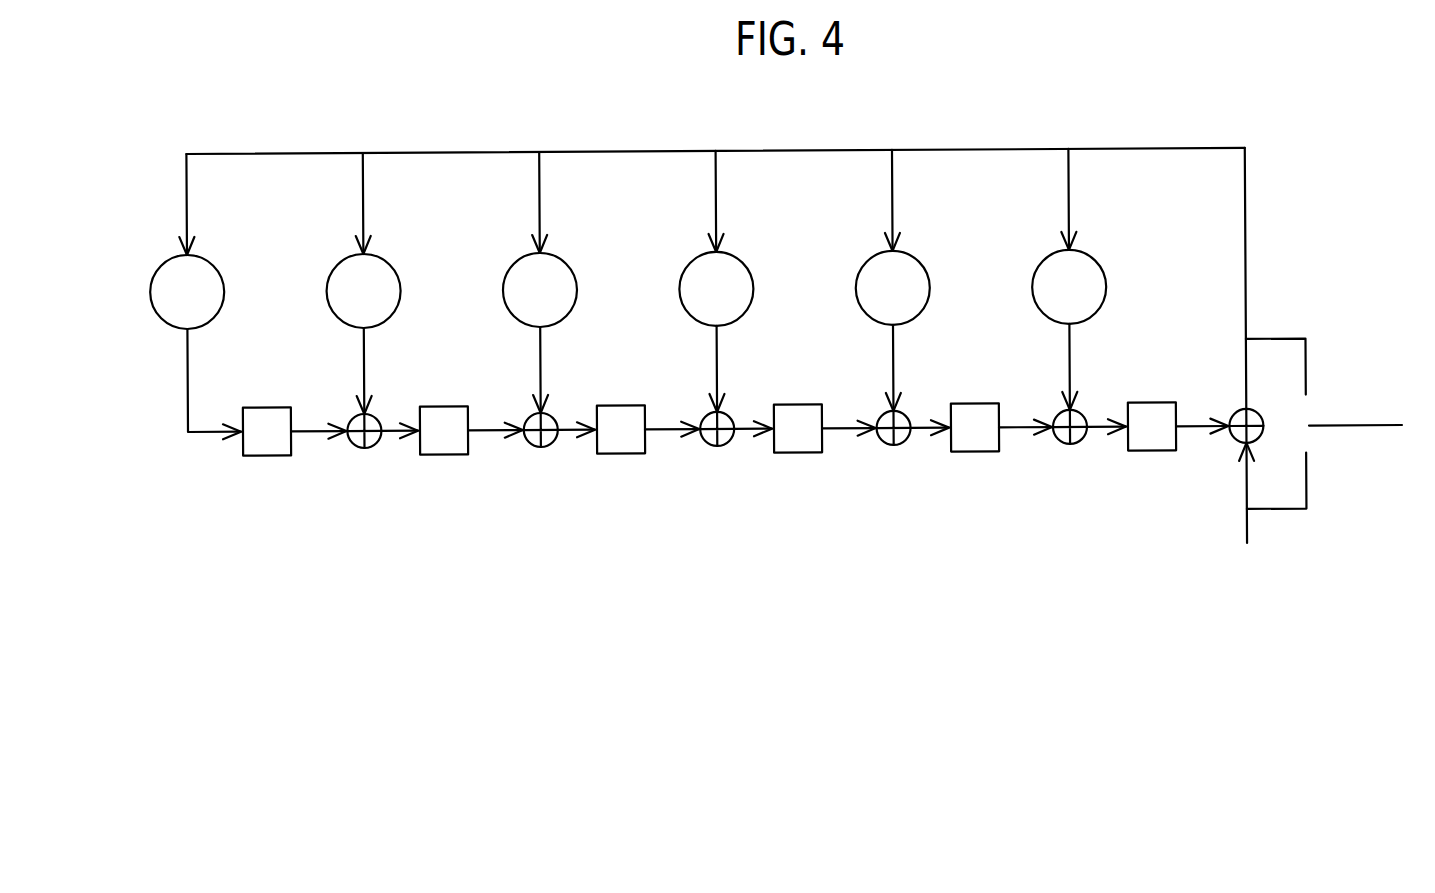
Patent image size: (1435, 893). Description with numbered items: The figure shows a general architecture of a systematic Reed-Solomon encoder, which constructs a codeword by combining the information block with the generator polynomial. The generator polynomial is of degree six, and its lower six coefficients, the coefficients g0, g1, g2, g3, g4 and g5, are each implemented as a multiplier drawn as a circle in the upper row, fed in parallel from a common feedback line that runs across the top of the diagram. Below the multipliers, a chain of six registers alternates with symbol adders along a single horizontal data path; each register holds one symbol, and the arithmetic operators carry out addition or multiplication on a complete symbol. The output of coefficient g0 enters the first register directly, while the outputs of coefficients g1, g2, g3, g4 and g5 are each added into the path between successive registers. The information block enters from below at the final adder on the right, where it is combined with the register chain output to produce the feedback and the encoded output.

The generator polynomial coefficient g0 is at (195, 297).
The generator polynomial coefficient g1 is at (364, 283).
The generator polynomial coefficient g2 is at (540, 282).
The generator polynomial coefficient g3 is at (717, 281).
The generator polynomial coefficient g4 is at (893, 280).
The generator polynomial coefficient g5 is at (1069, 279).